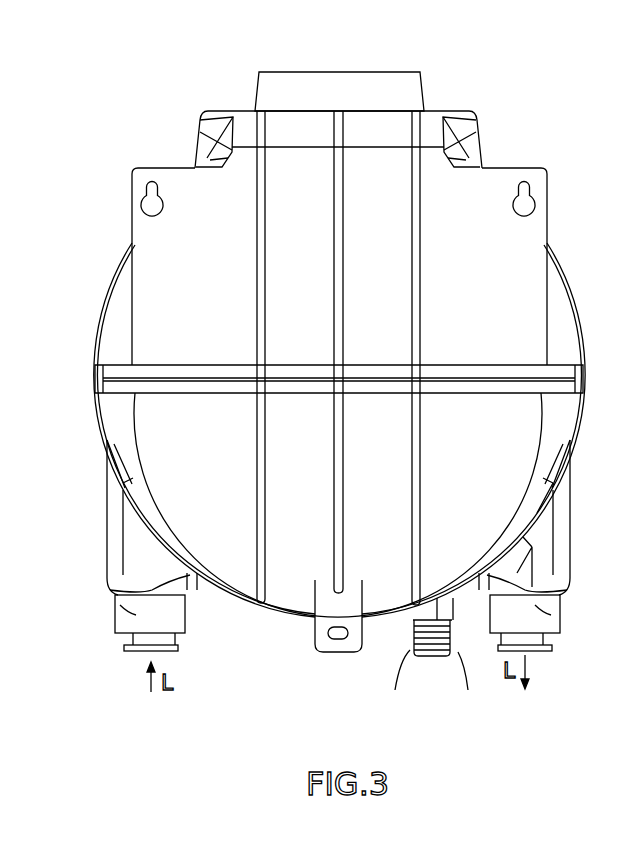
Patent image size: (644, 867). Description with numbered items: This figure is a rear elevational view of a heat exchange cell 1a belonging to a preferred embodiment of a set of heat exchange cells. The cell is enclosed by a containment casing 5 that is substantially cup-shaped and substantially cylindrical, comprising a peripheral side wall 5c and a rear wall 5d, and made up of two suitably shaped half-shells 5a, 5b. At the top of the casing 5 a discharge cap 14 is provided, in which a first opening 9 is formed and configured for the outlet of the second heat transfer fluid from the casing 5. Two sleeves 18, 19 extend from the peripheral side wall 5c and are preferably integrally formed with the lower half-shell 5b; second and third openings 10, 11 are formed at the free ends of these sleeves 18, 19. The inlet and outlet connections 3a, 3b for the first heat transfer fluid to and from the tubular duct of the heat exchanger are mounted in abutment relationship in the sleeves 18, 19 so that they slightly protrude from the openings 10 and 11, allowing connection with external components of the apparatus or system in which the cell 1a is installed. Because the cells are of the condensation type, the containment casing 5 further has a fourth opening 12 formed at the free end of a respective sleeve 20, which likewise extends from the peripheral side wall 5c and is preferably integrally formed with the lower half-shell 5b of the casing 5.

The heat exchange cell 1a is at (517, 125).
The first opening 9 is at (292, 70).
The discharge cap 14 is at (237, 122).
The containment casing 5 is at (577, 298).
The half-shell 5a is at (547, 253).
The lower half-shell 5b is at (528, 477).
The peripheral side wall 5c is at (87, 376).
The rear wall 5d is at (482, 298).
The sleeve 18 is at (128, 600).
The sleeve 19 is at (560, 617).
The inlet connection 3a is at (127, 640).
The outlet connection 3b is at (528, 640).
The second opening 10 is at (182, 640).
The third opening 11 is at (553, 637).
The fourth opening 12 is at (433, 657).
The sleeve 20 is at (408, 650).